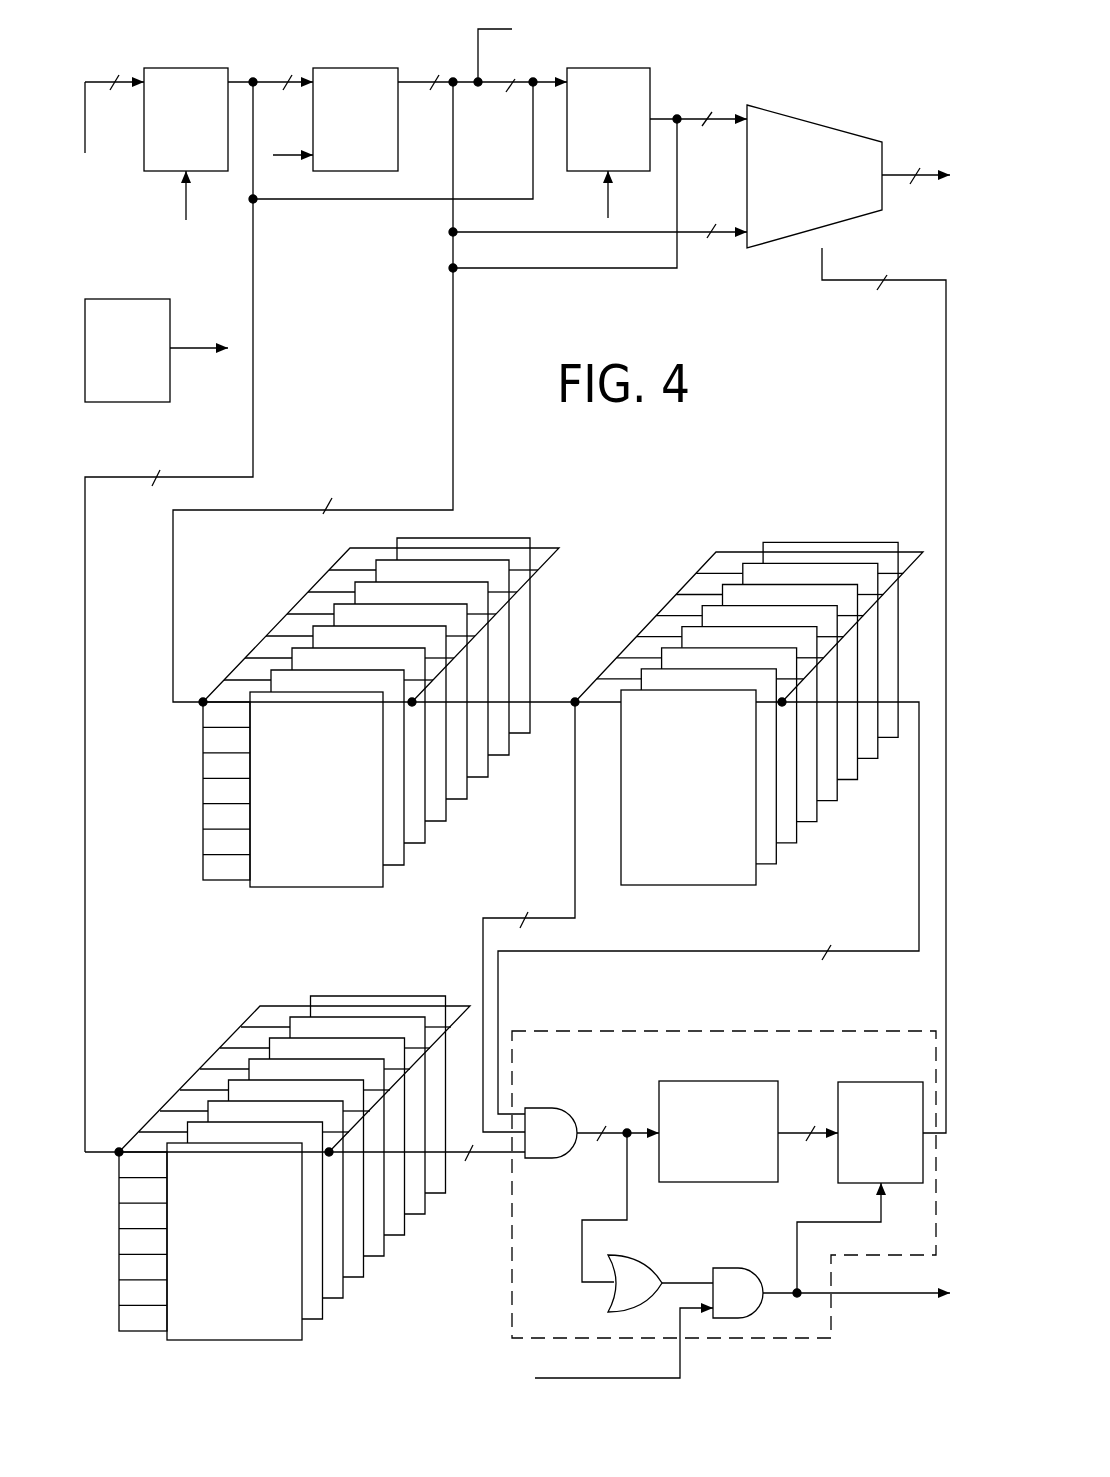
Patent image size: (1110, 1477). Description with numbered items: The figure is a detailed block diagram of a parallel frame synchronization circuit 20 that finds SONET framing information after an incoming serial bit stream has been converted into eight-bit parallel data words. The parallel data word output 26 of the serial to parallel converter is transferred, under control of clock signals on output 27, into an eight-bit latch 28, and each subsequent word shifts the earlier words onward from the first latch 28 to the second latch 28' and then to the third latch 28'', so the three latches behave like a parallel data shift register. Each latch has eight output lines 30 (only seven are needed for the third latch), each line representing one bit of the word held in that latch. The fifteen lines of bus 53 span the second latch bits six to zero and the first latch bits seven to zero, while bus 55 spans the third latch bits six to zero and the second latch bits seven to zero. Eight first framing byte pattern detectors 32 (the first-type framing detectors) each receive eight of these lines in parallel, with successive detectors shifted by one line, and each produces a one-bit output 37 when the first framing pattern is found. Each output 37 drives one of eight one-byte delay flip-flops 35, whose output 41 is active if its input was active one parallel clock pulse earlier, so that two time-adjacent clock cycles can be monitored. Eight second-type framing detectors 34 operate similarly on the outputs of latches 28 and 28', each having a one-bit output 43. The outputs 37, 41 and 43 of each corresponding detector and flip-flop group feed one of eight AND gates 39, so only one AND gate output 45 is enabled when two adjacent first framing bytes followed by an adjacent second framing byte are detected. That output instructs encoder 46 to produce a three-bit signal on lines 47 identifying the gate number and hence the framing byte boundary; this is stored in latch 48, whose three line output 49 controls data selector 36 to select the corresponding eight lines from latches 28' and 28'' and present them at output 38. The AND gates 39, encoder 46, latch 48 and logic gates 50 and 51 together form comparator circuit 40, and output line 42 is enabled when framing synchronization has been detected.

The parallel frame synchronization circuit 20 is at (800, 82).
The parallel data word output 26 is at (86, 105).
The clock signal output 27 is at (188, 204).
The latch #1 28 is at (185, 100).
The latch #2 28' is at (355, 100).
The latch #3 28'' is at (618, 99).
The latch output lines 30 is at (249, 82).
The first framing byte pattern detectors (A1 detectors) 32 is at (490, 540).
The A2 detectors 34 is at (387, 993).
The one-byte delay flip-flops 35 is at (826, 537).
The data selector 36 is at (849, 130).
The A1 detector output 37 is at (555, 698).
The data selector output 38 is at (886, 178).
The AND gates 39 is at (540, 1108).
The comparator circuit 40 is at (756, 1026).
The flip-flop output 41 is at (919, 840).
The output line 42 is at (912, 1298).
The A2 detector output 43 is at (493, 1153).
The AND gate output 45 is at (590, 1141).
The encoder 46 is at (713, 1183).
The encoder output lines 47 is at (797, 1140).
The latch 48 is at (887, 1082).
The three line output 49 is at (945, 428).
The logic gate 50 is at (640, 1262).
The logic gate 51 is at (745, 1268).
The bus 53 is at (254, 450).
The bus 55 is at (453, 433).